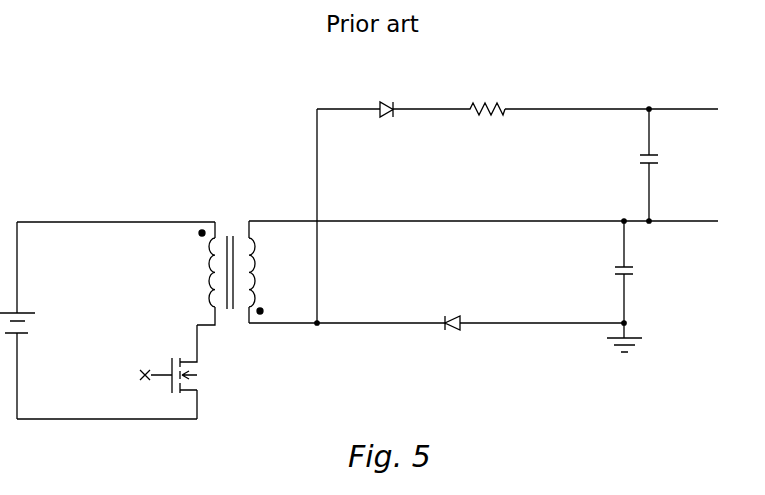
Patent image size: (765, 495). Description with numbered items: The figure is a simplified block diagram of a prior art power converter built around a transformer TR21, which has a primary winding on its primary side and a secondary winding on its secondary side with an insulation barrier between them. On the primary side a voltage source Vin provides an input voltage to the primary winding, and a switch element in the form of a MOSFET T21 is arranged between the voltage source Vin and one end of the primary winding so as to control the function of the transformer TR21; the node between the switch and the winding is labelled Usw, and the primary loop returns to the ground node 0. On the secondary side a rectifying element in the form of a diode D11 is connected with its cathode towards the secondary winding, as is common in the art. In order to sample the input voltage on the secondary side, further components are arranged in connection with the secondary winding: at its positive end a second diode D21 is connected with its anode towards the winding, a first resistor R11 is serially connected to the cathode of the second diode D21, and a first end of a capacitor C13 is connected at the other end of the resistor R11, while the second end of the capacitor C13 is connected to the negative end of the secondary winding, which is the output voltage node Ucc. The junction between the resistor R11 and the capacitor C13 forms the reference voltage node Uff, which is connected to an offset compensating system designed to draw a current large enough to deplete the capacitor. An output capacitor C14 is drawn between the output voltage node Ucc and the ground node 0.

The transformer TR21 is at (253, 193).
The MOSFET T21 is at (200, 377).
The second diode D21 is at (381, 105).
The diode D11 is at (432, 299).
The first resistor R11 is at (509, 84).
The capacitor C13 is at (655, 162).
The capacitor C14 is at (630, 273).
The voltage source Vin is at (27, 306).
The reference voltage node Uff is at (700, 99).
The supply voltage node Ucc is at (700, 211).
The switching voltage node Usw is at (351, 313).
The ground 0 is at (625, 346).